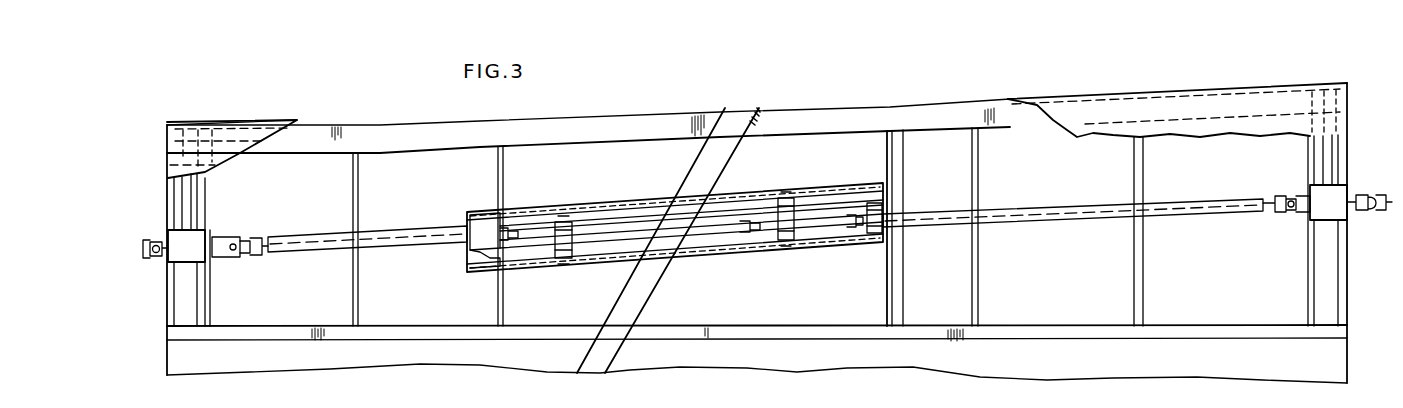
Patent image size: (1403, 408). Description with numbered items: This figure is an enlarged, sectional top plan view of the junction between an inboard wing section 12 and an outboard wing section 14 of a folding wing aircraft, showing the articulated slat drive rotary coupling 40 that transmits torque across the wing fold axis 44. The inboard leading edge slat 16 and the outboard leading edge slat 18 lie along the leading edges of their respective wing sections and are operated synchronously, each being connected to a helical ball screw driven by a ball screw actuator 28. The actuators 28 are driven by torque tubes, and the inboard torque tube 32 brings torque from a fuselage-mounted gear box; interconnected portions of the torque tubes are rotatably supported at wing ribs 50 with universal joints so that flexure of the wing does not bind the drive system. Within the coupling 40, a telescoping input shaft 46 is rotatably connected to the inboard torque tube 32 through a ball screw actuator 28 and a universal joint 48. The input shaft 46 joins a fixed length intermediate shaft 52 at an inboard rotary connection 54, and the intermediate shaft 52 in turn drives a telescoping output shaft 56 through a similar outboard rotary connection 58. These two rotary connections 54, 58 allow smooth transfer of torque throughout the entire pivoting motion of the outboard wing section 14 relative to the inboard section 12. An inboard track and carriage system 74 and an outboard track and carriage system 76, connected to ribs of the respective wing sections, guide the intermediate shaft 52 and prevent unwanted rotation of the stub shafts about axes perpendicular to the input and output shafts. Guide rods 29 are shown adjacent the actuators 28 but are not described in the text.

The inboard wing section 12 is at (1025, 280).
The outboard wing section 14 is at (411, 296).
The inboard leading edge slat 16 is at (1172, 90).
The outboard leading edge slat 18 is at (257, 120).
The ball screw actuator 28 is at (190, 264).
The guide rods 29 is at (193, 207).
The inboard torque tube 32 is at (163, 243).
The articulated slat drive rotary coupling 40 is at (818, 94).
The wing fold axis 44 is at (613, 345).
The telescoping input shaft 46 is at (1012, 212).
The universal joint 48 is at (1290, 213).
The wing rib 50 is at (207, 306).
The intermediate shaft 52 is at (728, 236).
The inboard rotary connection 54 is at (806, 236).
The telescoping output shaft 56 is at (398, 233).
The outboard rotary connection 58 is at (541, 252).
The inboard track and carriage system 74 is at (785, 184).
The outboard track and carriage system 76 is at (588, 198).